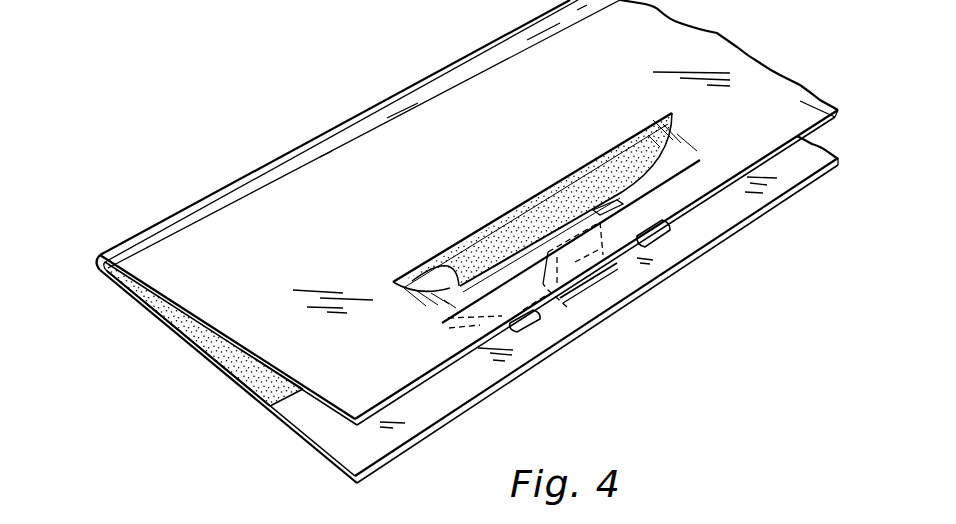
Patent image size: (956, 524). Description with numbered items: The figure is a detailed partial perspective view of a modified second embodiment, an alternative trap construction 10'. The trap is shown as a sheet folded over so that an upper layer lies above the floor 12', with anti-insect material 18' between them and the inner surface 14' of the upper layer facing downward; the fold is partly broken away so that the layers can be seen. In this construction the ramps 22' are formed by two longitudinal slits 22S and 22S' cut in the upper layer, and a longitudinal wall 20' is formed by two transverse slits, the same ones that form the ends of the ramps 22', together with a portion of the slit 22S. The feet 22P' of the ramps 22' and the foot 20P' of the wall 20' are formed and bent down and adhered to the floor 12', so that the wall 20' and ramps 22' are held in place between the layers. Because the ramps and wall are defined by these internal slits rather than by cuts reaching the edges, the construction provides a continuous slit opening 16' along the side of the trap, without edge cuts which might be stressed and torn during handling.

The trap construction 10' is at (468, 212).
The floor 12' is at (469, 325).
The inner surface of top plate 14' is at (297, 418).
The continuous slit opening 16' is at (496, 389).
The foam layer 18' is at (204, 334).
The longitudinal wall 20' is at (617, 267).
The foot of wall 20P' is at (593, 321).
The ramps 22' is at (544, 219).
The longitudinal slit 22S is at (536, 202).
The longitudinal slit 22S' is at (505, 221).
The feet of ramps 22P' is at (629, 307).